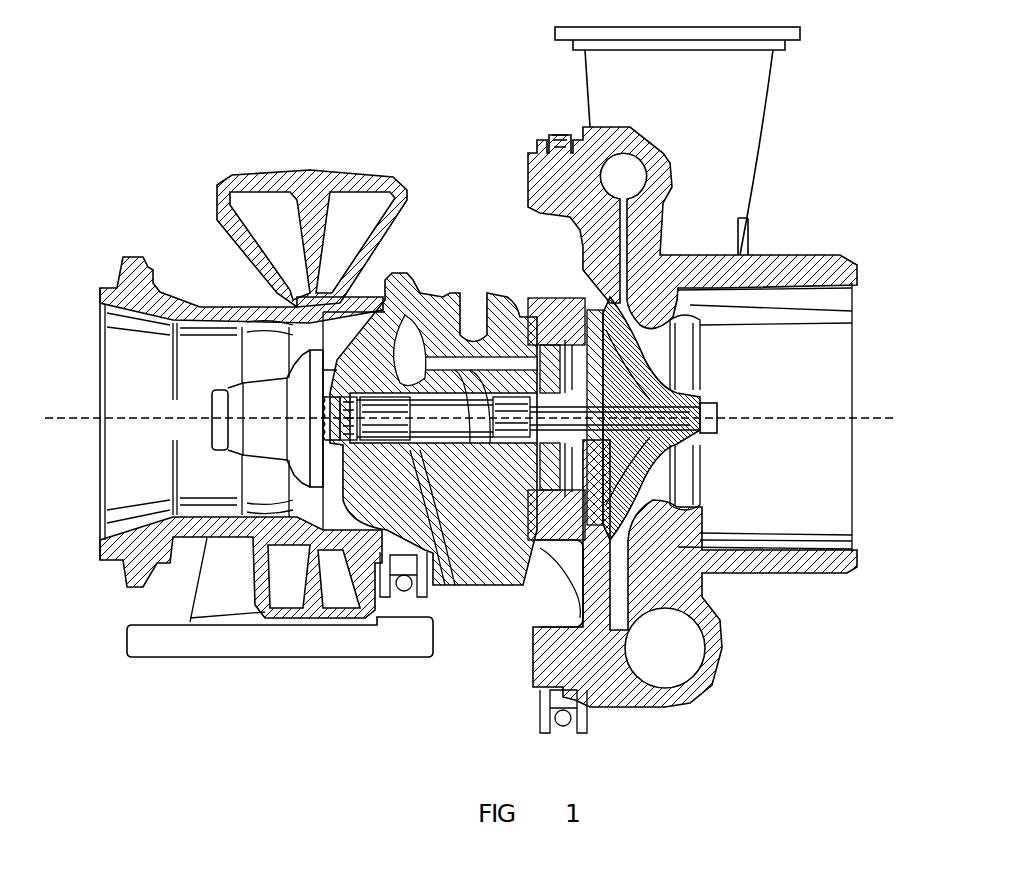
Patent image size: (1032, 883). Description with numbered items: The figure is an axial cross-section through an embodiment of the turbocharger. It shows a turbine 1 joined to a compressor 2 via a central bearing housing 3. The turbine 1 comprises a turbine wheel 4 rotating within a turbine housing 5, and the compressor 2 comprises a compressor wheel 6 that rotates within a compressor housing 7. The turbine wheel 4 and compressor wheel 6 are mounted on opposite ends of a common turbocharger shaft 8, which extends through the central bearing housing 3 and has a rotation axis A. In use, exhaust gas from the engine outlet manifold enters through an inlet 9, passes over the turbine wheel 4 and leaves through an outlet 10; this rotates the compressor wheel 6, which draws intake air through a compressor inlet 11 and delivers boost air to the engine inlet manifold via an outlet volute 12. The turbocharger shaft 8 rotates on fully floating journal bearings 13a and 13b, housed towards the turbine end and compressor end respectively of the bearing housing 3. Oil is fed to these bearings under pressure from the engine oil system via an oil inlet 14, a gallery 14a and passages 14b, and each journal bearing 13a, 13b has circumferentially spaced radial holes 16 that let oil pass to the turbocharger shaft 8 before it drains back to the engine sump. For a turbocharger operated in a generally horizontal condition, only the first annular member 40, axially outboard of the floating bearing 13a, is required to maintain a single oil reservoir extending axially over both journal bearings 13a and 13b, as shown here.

The turbine 1 is at (151, 231).
The compressor 2 is at (857, 301).
The central bearing housing 3 is at (437, 327).
The turbine wheel 4 is at (250, 377).
The turbine housing 5 is at (230, 177).
The compressor wheel 6 is at (653, 490).
The compressor housing 7 is at (777, 258).
The turbocharger shaft 8 is at (647, 417).
The inlet 9 is at (283, 212).
The outlet 10 is at (173, 457).
The compressor inlet 11 is at (800, 497).
The outlet volute 12 is at (673, 652).
The journal bearing 13a is at (447, 573).
The journal bearing 13b is at (533, 560).
The oil inlet 14 is at (485, 372).
The gallery 14a is at (453, 360).
The passages 14b is at (505, 378).
The radial holes 16 is at (548, 525).
The first annular member 40 is at (303, 533).
The rotation axis A is at (68, 416).